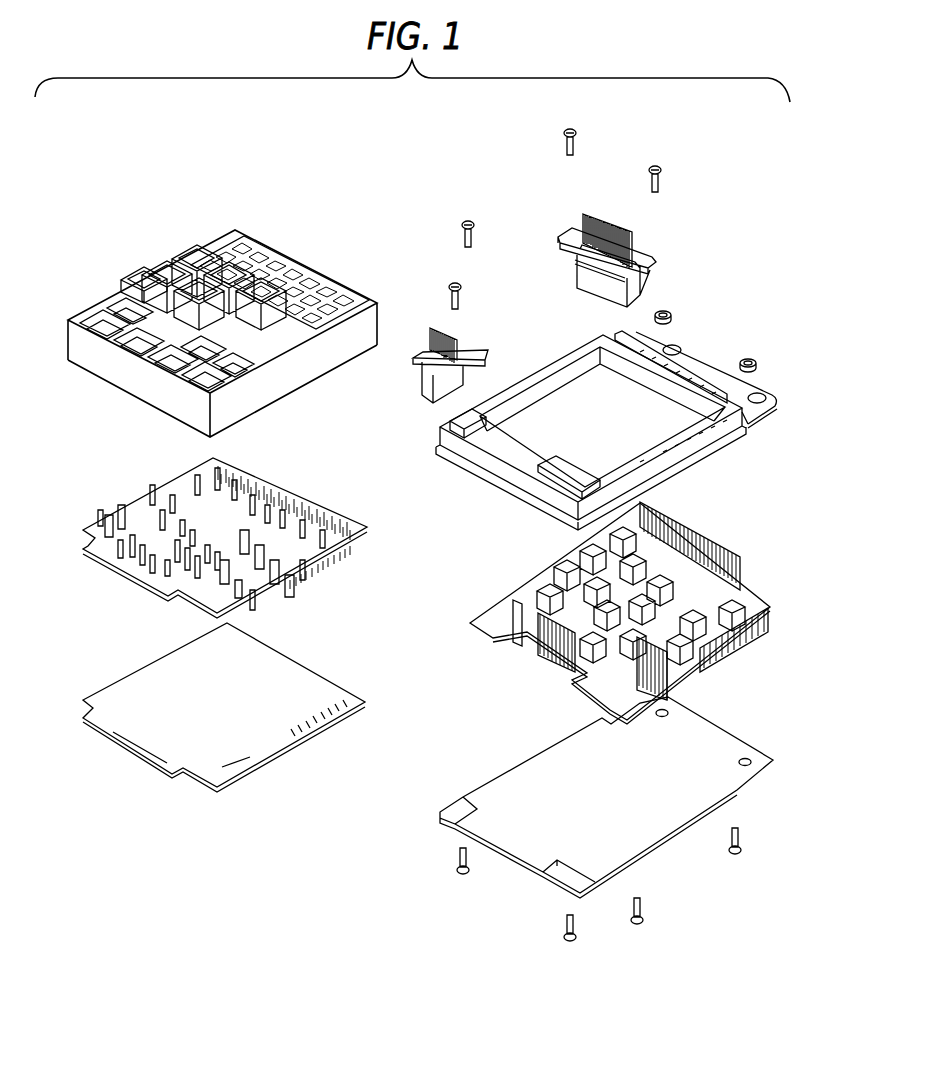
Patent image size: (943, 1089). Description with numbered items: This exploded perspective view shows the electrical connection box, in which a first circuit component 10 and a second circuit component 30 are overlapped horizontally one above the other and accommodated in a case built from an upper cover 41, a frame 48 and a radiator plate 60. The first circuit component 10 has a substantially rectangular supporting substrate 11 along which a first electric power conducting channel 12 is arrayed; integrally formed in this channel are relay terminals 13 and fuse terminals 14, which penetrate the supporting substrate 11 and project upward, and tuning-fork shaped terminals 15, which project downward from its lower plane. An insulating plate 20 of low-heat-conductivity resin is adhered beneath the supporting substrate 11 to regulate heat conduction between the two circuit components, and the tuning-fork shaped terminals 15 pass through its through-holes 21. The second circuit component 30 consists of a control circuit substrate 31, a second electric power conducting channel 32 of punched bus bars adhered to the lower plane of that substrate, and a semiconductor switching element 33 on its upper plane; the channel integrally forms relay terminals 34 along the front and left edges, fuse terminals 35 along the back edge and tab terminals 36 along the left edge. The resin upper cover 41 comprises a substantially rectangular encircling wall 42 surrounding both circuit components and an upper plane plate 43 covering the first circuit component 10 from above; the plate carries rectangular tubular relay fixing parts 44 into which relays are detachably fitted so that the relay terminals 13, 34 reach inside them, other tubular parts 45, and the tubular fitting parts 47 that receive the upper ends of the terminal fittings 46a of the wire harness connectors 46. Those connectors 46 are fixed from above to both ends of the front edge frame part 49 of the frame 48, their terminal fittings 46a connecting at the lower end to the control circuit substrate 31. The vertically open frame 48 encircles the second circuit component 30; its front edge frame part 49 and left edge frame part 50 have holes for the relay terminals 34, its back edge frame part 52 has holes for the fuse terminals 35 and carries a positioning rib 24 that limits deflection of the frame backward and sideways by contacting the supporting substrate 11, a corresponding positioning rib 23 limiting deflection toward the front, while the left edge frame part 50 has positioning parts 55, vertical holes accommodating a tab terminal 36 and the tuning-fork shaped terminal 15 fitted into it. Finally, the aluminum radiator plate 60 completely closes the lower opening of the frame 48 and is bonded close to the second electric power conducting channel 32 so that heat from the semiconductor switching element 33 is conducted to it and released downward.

The first circuit component 10 is at (239, 532).
The supporting substrate 11 is at (130, 517).
The first electric power conducting channel 12 is at (330, 583).
The relay terminals 13 is at (152, 483).
The fuse terminals 14 is at (337, 502).
The tuning-fork shaped terminals 15 is at (345, 553).
The insulating plate 20 is at (224, 734).
The through-holes 21 is at (290, 737).
The recess 23 is at (515, 437).
The positioning rib 24 is at (677, 367).
The second circuit component 30 is at (650, 601).
The control circuit substrate 31 is at (708, 603).
The second electric power conducting channel 32 is at (755, 647).
The semiconductor switching element 33 is at (560, 563).
The relay terminals 34 is at (517, 627).
The fuse terminals 35 is at (668, 535).
The tab terminals 36 is at (770, 617).
The upper cover 41 is at (235, 301).
The encircling wall 42 is at (287, 388).
The upper plane plate 43 is at (313, 327).
The relay fixing parts 44 is at (118, 292).
The connector housings 45 is at (290, 253).
The wire harness connector 46 is at (570, 288).
The terminal fitting 46a is at (623, 227).
The tubular fitting part 47 is at (75, 365).
The frame 48 is at (622, 379).
The front edge frame part 49 is at (483, 457).
The left edge frame part 50 is at (683, 455).
The back edge frame part 52 is at (683, 403).
The positioning parts 55 is at (760, 412).
The radiator plate 60 is at (662, 823).